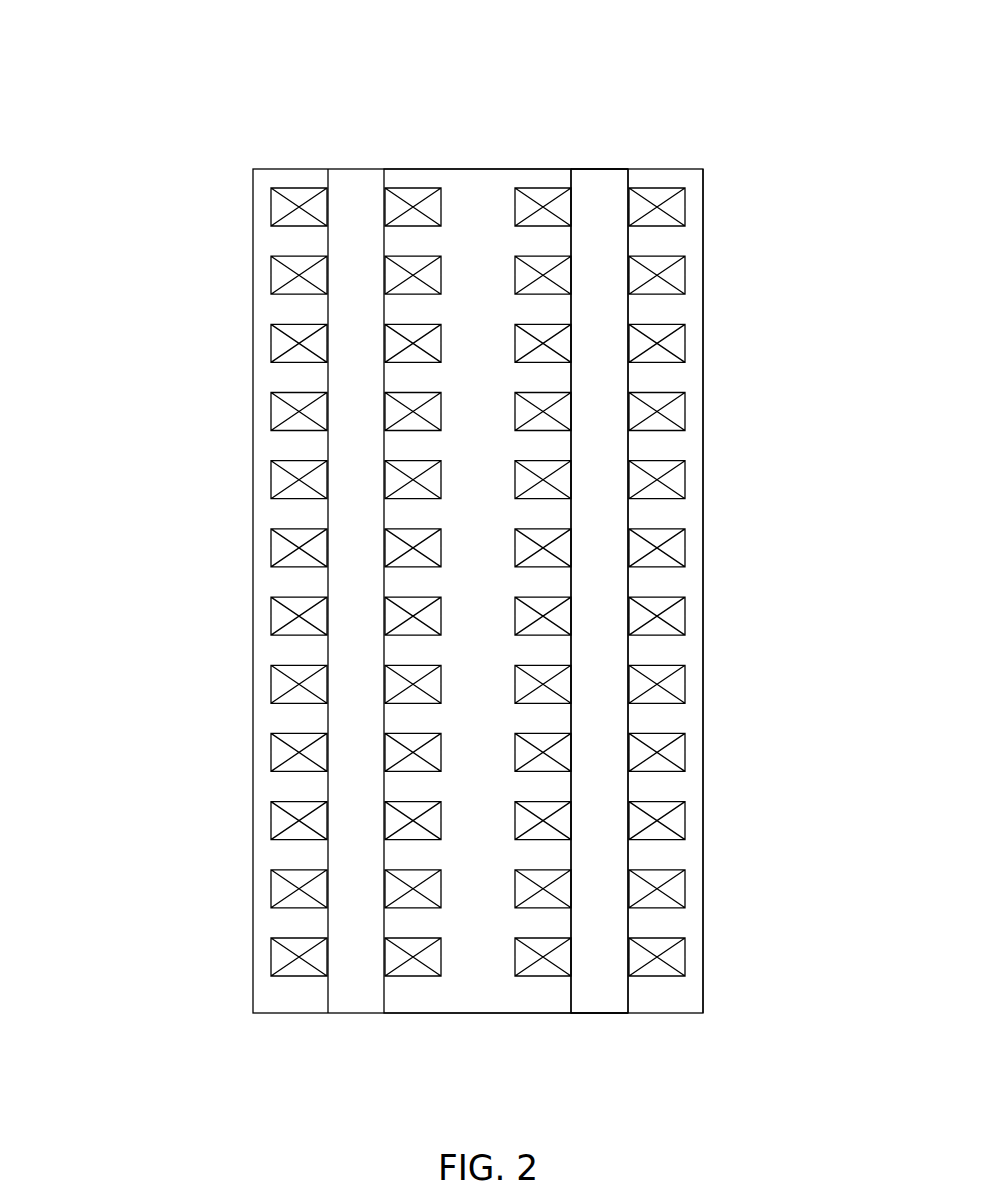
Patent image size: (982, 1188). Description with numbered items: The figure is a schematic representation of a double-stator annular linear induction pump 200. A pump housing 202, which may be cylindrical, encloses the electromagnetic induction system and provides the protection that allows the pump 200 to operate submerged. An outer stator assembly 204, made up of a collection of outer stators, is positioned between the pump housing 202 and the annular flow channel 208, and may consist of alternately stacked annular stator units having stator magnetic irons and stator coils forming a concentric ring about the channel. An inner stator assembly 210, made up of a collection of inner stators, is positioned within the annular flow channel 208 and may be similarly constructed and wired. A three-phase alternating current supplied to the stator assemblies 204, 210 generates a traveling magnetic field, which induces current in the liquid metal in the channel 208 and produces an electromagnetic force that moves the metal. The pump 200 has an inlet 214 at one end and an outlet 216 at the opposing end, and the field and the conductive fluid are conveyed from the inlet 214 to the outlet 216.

The double-stator annular linear induction pump 200 is at (235, 96).
The pump housing 202 is at (252, 443).
The outer stator assembly 204 is at (661, 172).
The annular flow channel 208 is at (601, 206).
The inner stator assembly 210 is at (422, 171).
The inlet 214 is at (601, 1019).
The outlet 216 is at (600, 162).